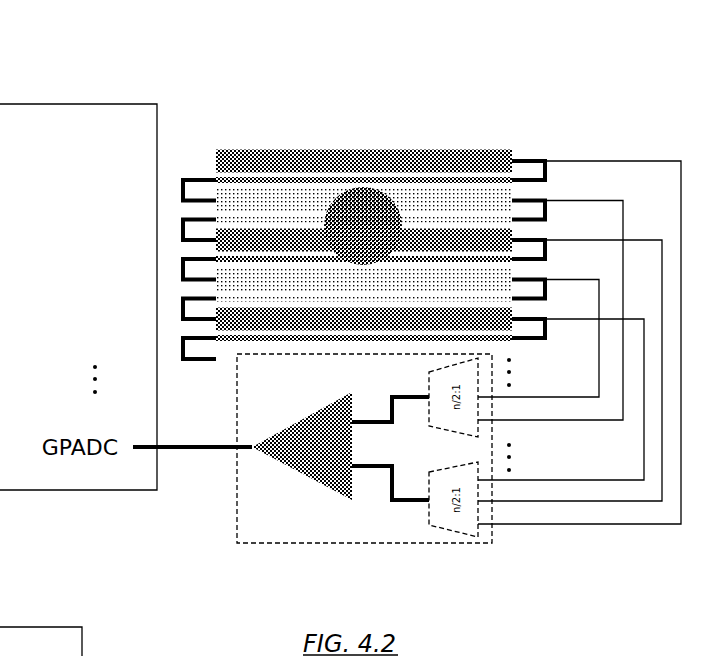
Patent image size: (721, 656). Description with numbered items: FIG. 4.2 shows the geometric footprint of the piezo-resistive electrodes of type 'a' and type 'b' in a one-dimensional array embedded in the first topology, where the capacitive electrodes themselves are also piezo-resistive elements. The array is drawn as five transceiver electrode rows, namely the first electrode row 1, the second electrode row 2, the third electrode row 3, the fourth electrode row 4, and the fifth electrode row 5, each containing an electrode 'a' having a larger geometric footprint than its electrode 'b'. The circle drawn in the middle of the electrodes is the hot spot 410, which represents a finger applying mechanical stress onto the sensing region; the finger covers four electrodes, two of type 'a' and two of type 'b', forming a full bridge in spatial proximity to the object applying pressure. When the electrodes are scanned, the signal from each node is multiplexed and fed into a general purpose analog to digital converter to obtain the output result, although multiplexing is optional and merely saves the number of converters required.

The electrode row TRx1 1 is at (216, 161).
The electrode row TRx2 2 is at (216, 200).
The electrode row TRx3 3 is at (216, 240).
The electrode row TRx4 4 is at (216, 280).
The electrode row TRx5 5 is at (216, 319).
The hot spot 410 is at (432, 202).